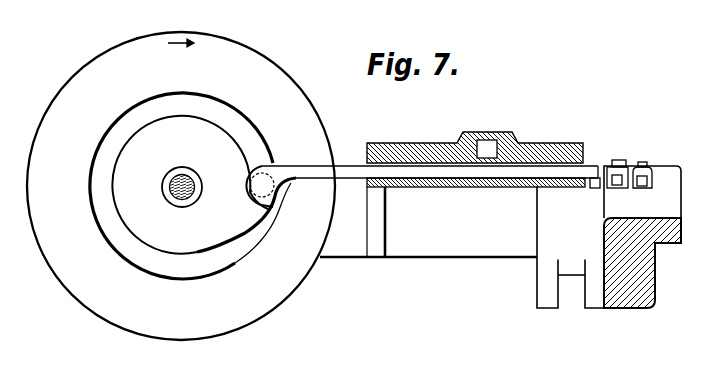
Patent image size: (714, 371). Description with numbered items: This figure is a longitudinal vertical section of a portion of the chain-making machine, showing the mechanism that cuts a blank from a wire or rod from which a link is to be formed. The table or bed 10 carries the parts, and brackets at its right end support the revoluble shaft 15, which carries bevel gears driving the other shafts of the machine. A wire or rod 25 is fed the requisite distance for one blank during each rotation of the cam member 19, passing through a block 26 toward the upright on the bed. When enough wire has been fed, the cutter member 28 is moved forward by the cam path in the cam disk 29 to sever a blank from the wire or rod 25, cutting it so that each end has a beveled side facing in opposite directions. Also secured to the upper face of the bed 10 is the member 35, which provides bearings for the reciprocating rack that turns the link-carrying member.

The table or bed 10 is at (468, 187).
The revoluble shaft 15 is at (170, 198).
The cam member 19 is at (658, 182).
The wire or rod 25 is at (620, 165).
The block 26 is at (630, 166).
The cutter member 28 is at (590, 170).
The cam disk 29 is at (278, 62).
The member 35 is at (533, 133).